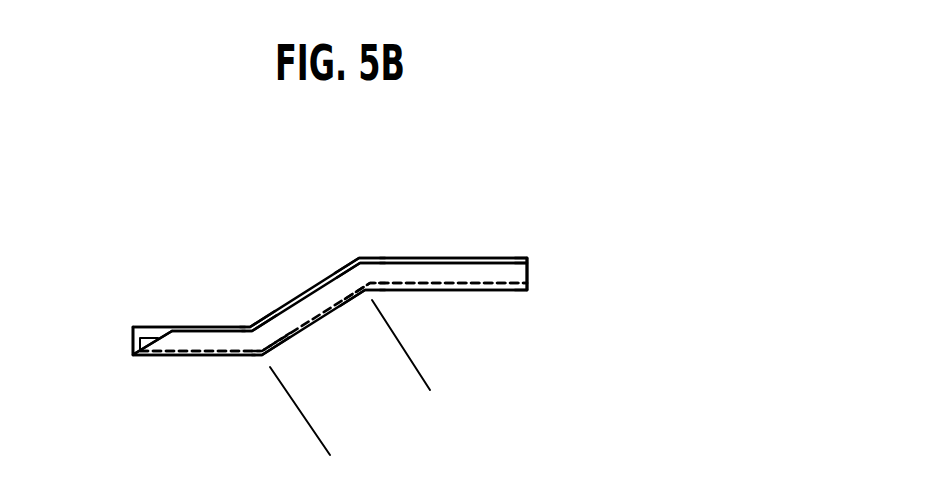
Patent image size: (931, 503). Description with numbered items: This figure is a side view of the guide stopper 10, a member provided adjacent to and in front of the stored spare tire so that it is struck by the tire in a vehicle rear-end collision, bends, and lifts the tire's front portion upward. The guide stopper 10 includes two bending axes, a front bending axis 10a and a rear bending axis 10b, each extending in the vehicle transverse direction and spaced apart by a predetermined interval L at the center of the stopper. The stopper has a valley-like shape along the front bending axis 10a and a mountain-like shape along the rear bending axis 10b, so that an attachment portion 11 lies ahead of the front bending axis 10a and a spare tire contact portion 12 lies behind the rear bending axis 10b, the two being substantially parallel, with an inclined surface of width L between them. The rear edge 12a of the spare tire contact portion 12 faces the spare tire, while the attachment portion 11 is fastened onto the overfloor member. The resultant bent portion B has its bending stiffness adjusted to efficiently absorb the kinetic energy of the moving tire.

The guide stopper 10 is at (495, 232).
The front bending axis 10a is at (263, 353).
The rear bending axis 10b is at (365, 289).
The attachment portion 11 is at (187, 358).
The spare tire contact portion 12 is at (460, 292).
The rear edge 12a is at (527, 272).
The bent portion B is at (255, 320).
The predetermined interval L is at (417, 370).